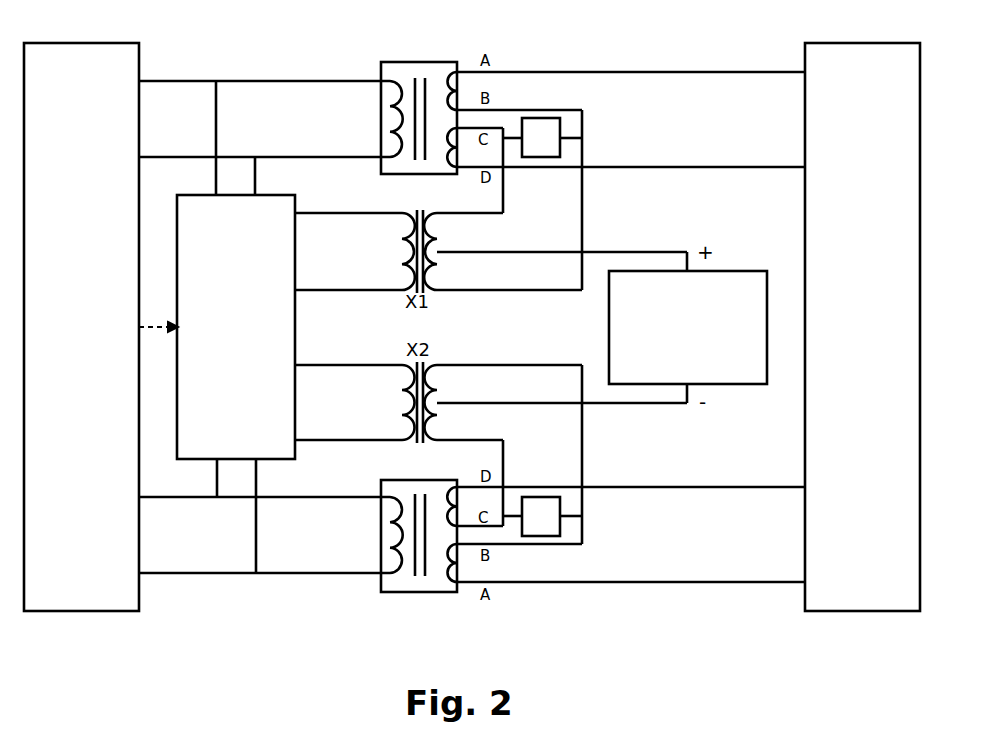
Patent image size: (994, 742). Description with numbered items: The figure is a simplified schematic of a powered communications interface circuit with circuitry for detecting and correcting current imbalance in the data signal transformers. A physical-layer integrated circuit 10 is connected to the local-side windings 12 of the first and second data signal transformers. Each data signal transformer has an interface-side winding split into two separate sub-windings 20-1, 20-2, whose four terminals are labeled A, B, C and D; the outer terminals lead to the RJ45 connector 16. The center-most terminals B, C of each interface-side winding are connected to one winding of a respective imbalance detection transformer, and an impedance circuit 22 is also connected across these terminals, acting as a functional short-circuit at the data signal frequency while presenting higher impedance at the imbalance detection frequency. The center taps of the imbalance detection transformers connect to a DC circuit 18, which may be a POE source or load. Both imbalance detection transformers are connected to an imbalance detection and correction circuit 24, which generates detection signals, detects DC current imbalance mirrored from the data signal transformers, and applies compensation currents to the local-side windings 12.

The physical-layer integrated circuit 10 is at (70, 350).
The local-side windings 12 is at (388, 80).
The RJ45 connector 16 is at (852, 351).
The DC circuit 18 is at (677, 376).
The sub-winding 20-1 is at (453, 62).
The sub-winding 20-2 is at (453, 174).
The impedance circuit 22 is at (549, 118).
The imbalance detection and correction circuit 24 is at (225, 375).